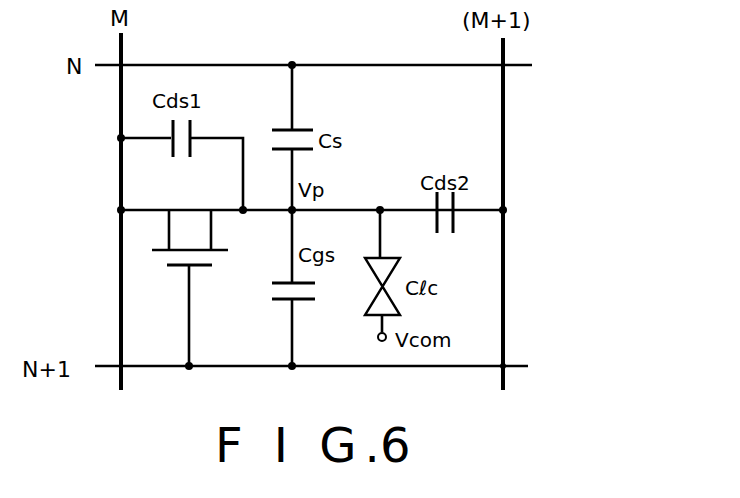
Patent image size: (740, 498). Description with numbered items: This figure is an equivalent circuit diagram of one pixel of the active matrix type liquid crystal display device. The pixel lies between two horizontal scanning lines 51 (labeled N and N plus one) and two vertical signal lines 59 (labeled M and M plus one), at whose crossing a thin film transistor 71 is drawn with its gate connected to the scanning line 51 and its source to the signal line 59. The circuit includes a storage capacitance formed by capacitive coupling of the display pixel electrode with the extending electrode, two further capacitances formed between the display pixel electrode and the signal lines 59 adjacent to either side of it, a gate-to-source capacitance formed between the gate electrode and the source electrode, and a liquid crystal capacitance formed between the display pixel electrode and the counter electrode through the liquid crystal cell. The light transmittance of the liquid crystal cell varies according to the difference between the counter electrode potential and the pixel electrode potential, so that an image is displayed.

The scanning line 51 is at (518, 64).
The signal line 59 is at (121, 292).
The liquid crystal cell 71 is at (190, 228).